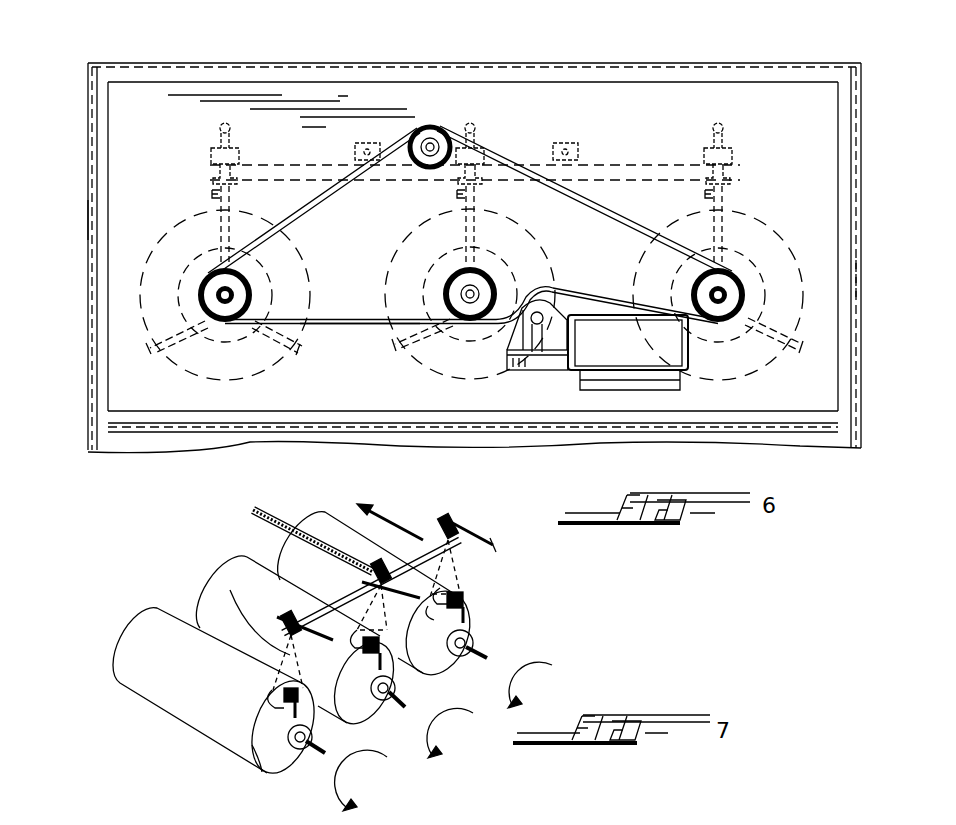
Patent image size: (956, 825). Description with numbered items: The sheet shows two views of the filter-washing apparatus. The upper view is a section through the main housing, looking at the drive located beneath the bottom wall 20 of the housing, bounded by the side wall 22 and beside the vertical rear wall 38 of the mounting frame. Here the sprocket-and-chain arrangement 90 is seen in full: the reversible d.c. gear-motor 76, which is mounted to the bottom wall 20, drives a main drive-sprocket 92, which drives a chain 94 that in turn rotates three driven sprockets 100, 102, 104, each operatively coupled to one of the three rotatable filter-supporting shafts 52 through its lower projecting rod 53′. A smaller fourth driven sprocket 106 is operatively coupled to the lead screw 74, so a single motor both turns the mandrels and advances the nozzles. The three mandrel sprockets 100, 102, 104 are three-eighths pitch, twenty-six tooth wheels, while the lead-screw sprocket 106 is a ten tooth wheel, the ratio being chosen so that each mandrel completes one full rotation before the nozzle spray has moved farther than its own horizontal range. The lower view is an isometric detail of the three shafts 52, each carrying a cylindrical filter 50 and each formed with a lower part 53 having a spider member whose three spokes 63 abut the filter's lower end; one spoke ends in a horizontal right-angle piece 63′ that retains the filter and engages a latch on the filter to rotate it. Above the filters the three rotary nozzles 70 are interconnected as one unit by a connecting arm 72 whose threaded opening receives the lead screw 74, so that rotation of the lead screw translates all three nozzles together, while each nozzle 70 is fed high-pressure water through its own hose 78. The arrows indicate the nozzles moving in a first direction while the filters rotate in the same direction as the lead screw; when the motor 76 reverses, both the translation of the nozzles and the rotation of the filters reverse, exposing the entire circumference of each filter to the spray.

In FIG. 6, the bottom wall 20 is at (652, 122).
In FIG. 6, the side wall 22 is at (622, 432).
In FIG. 6, the vertical rear wall 38 is at (858, 296).
In FIG. 7, the cylindrical filter 50 is at (297, 527).
In FIG. 7, the rotatable filter-supporting shaft 52 is at (402, 758).
In FIG. 7, the lower part 53 is at (458, 656).
In FIG. 7, the lower projecting rod 53′ is at (313, 742).
In FIG. 7, the spoke 63 is at (465, 600).
In FIG. 7, the horizontal right-angle piece 63′ is at (465, 598).
In FIG. 7, the nozzle 70 is at (258, 628).
In FIG. 7, the connecting arm 72 is at (433, 541).
In FIG. 7, the lead screw 74 is at (262, 515).
In FIG. 6, the reversible d.c. gear-motor 76 is at (630, 354).
In FIG. 7, the hose 78 is at (493, 538).
In FIG. 6, the sprocket-and-chain arrangement 90 is at (316, 190).
In FIG. 6, the main drive-sprocket 92 is at (506, 334).
In FIG. 6, the chain 94 is at (345, 320).
In FIG. 6, the driven sprocket 100 is at (288, 252).
In FIG. 6, the driven sprocket 102 is at (505, 270).
In FIG. 6, the driven sprocket 104 is at (748, 238).
In FIG. 6, the fourth driven sprocket 106 is at (431, 124).